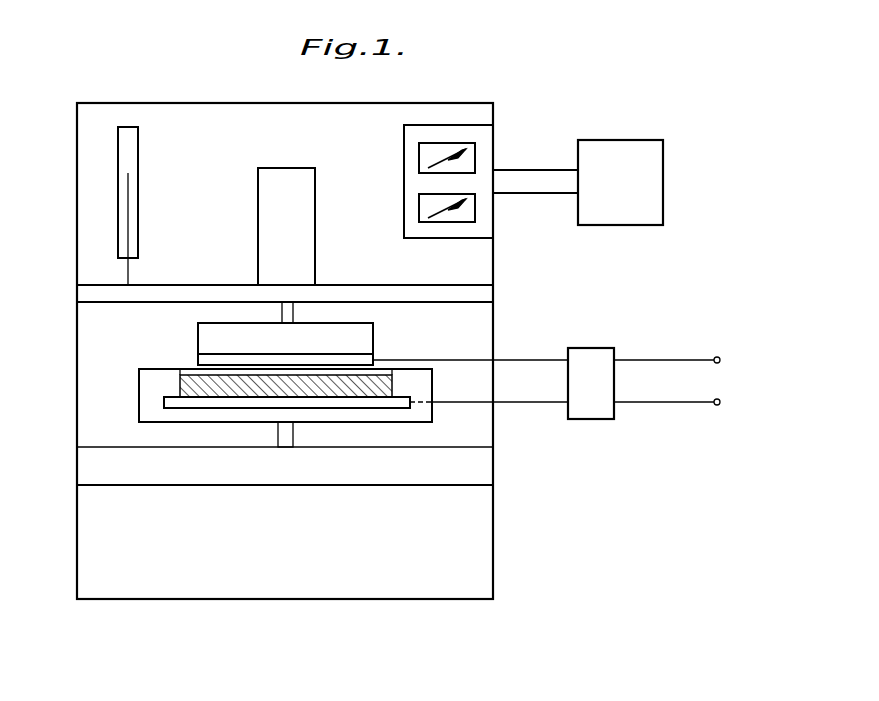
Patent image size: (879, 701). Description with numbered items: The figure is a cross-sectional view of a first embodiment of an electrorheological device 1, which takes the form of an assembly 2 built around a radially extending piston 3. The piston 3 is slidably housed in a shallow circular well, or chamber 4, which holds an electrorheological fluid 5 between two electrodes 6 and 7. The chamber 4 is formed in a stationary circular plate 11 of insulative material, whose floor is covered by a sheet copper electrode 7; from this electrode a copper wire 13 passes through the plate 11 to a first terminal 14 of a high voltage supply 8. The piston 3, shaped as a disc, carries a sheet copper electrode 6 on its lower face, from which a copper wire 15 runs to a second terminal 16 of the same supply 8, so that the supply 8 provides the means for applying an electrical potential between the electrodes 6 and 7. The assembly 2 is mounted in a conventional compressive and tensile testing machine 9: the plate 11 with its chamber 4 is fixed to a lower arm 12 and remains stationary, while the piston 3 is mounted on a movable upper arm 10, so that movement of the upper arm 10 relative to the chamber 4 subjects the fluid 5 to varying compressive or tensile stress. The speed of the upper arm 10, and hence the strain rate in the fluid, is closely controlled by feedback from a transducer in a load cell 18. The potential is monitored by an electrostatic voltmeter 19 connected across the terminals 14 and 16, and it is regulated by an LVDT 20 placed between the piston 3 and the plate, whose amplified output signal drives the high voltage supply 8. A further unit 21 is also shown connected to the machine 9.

The device 1 is at (283, 612).
The assembly 2 is at (112, 393).
The piston 3 is at (198, 331).
The chamber 4 is at (180, 384).
The electrorheological fluid 5 is at (200, 388).
The electrode 6 is at (198, 360).
The electrode 7 is at (260, 406).
The high voltage supply 8 is at (675, 381).
The testing machine 9 is at (497, 552).
The upper arm 10 is at (287, 318).
The stationary circular plate 11 is at (402, 413).
The lower arm 12 is at (289, 433).
The copper wire 13 is at (530, 405).
The first terminal 14 is at (717, 408).
The copper wire 15 is at (537, 358).
The second terminal 16 is at (717, 355).
The load cell 18 is at (300, 238).
The electrostatic voltmeter 19 is at (604, 392).
The LVDT 20 is at (128, 197).
The control unit 21 is at (665, 186).